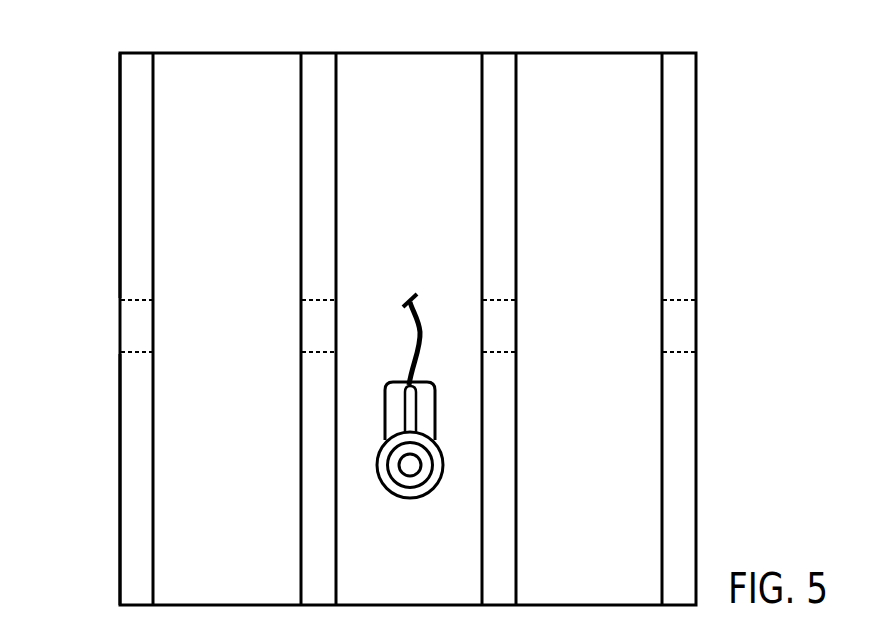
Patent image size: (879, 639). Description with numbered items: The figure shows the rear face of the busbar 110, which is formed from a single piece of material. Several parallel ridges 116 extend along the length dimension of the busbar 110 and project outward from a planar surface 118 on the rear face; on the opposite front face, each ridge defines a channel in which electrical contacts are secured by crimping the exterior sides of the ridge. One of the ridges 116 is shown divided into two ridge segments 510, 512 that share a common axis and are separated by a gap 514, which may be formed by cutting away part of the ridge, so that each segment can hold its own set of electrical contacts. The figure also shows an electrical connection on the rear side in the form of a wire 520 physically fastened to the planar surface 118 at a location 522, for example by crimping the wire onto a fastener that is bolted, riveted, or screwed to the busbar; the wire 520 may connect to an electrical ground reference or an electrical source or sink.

The busbar 110 is at (78, 134).
The ridge 116 is at (143, 63).
The planar surface 118 is at (220, 75).
The ridge segment 510 is at (137, 250).
The ridge segment 512 is at (140, 455).
The gap 514 is at (138, 325).
The wire 520 is at (421, 331).
The fastening location 522 is at (409, 466).